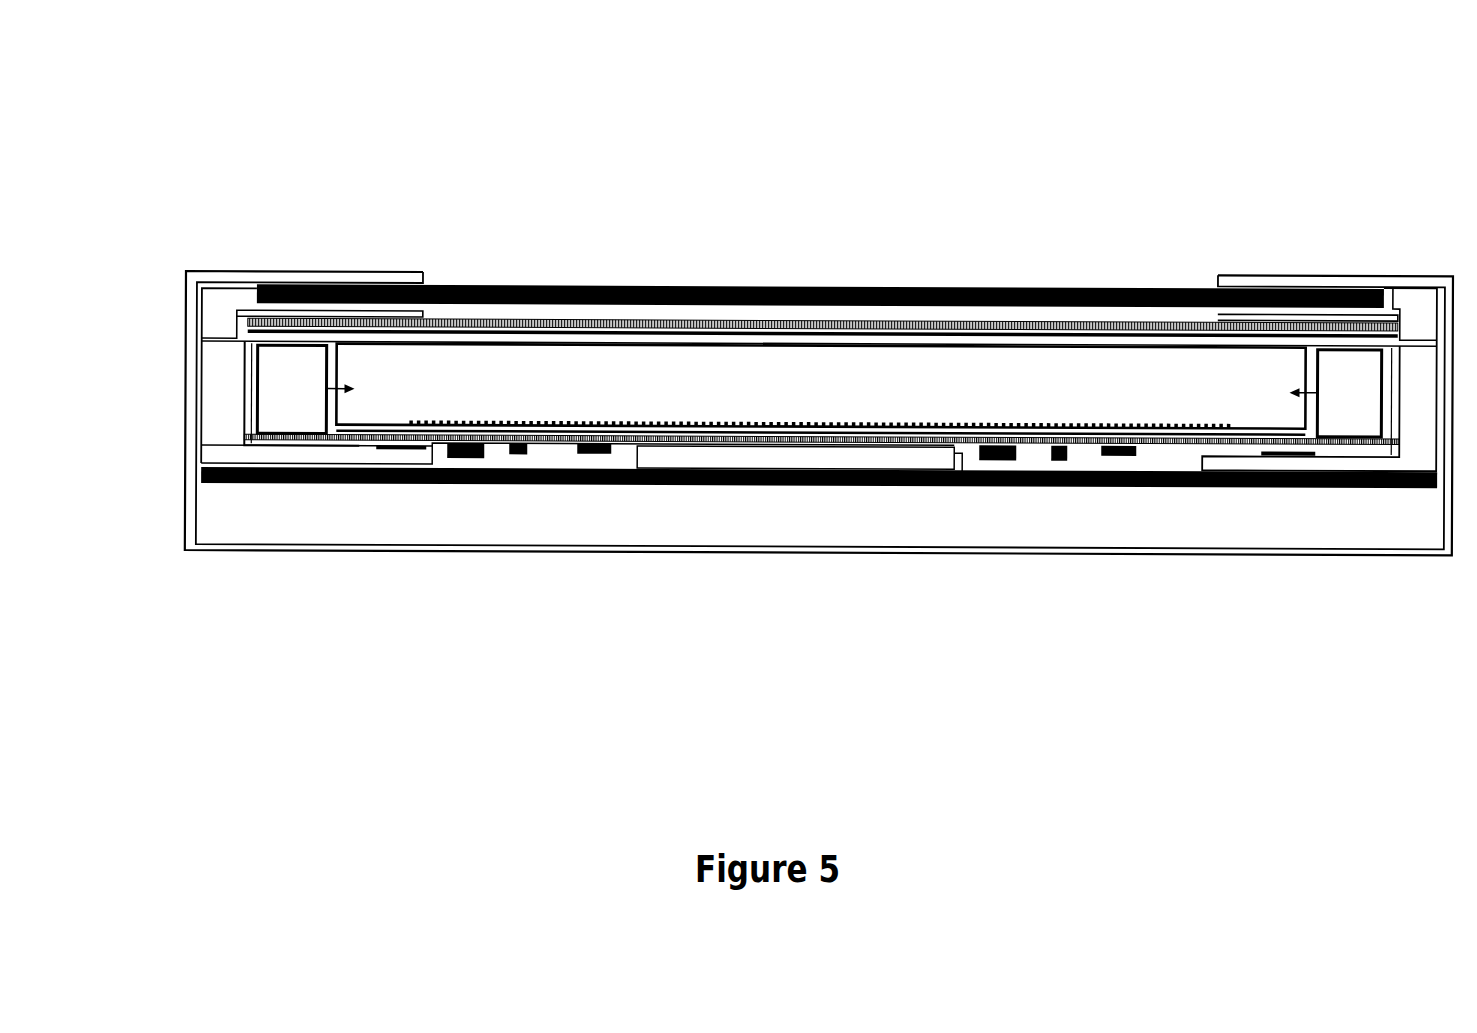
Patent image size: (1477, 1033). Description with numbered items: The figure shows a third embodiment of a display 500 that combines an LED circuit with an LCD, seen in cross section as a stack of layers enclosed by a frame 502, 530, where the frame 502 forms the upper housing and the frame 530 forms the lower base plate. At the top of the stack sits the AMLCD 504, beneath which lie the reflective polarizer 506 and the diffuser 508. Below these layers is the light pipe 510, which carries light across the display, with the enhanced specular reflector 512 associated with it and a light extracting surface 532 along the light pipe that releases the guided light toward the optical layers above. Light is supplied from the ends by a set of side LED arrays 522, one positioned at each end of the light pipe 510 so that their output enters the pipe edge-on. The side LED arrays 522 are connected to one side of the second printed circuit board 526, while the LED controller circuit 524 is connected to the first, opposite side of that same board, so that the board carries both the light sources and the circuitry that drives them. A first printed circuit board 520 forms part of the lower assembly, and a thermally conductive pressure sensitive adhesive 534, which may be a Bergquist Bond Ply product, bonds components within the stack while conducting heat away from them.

The display 500 is at (780, 369).
The frame 502 is at (819, 331).
The AMLCD 504 is at (821, 215).
The reflective polarizer 506 is at (823, 233).
The diffuser 508 is at (823, 245).
The light pipe 510 is at (821, 296).
The enhanced specular reflector 512 is at (819, 307).
The first printed circuit board 520 is at (164, 595).
The side LED arrays 522 is at (789, 506).
The LED controller circuit 524 is at (771, 570).
The second printed circuit board 526 is at (821, 553).
The frame 530 is at (818, 587).
The light extracting surface 532 is at (818, 502).
The thermally conductive pressure sensitive adhesive 534 is at (1201, 563).